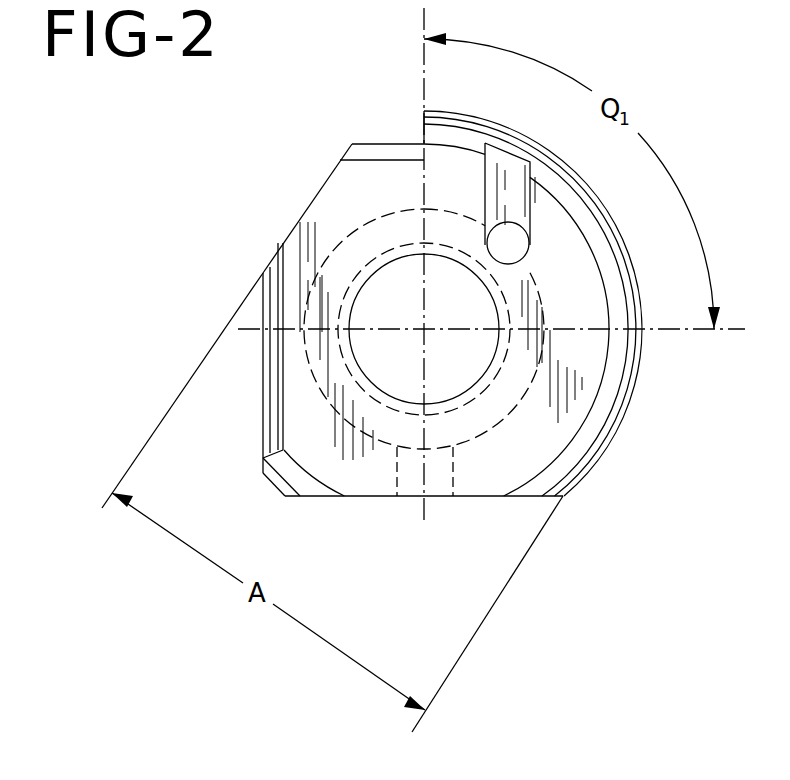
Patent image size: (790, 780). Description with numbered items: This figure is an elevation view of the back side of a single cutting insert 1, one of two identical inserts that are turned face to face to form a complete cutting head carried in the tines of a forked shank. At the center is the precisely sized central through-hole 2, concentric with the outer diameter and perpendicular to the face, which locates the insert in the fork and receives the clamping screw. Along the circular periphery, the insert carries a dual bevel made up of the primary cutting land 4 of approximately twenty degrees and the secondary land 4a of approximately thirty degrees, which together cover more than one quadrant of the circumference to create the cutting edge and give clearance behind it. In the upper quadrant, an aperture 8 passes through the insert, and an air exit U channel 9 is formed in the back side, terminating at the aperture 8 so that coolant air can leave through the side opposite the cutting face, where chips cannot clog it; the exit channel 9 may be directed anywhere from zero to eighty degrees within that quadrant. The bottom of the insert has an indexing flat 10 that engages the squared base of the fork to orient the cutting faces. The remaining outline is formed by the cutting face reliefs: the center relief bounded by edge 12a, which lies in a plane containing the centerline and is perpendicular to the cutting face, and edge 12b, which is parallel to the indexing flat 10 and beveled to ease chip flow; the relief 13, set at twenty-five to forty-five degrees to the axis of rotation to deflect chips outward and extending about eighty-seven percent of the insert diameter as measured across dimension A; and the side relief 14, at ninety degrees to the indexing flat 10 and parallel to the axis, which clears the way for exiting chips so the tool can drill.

The cutting insert 1 is at (360, 530).
The central through-hole 2 is at (490, 335).
The primary cutting land 4 is at (641, 366).
The secondary land 4a is at (601, 408).
The aperture 8 is at (508, 245).
The air exit U channel 9 is at (507, 163).
The indexing flat 10 is at (461, 496).
The center relief edge 12a is at (424, 133).
The beveled center relief edge 12b is at (356, 148).
The relief 13 is at (310, 206).
The side relief 14 is at (277, 300).